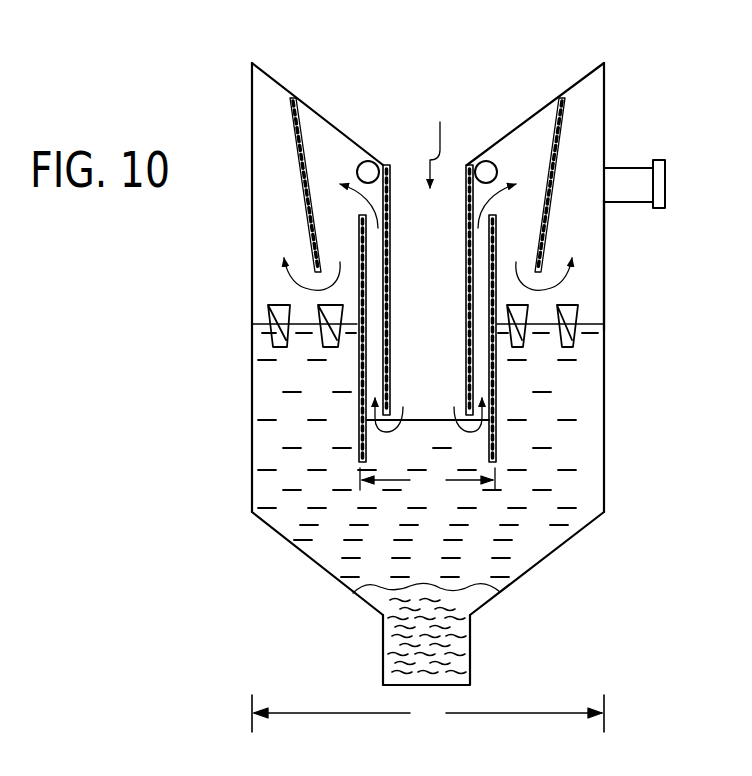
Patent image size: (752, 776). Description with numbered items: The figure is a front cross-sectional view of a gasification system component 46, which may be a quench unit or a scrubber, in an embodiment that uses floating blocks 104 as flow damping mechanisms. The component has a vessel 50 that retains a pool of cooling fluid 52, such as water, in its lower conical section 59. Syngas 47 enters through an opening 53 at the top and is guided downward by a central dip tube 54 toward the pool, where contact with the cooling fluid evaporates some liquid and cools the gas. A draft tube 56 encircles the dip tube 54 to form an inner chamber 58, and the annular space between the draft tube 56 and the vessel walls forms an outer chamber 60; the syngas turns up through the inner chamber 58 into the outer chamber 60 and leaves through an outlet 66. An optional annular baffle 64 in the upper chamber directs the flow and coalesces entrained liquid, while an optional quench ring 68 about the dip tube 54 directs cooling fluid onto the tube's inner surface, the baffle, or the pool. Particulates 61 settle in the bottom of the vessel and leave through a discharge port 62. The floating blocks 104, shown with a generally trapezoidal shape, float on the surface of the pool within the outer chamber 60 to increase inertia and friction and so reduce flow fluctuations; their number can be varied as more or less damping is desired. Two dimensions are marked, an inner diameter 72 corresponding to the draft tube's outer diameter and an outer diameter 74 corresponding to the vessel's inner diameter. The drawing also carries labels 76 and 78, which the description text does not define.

The gasification system component 46 is at (638, 41).
The syngas 47 is at (442, 140).
The vessel 50 is at (605, 230).
The cooling fluid 52 is at (268, 496).
The opening 53 is at (412, 166).
The dip tube 54 is at (383, 336).
The draft tube 56 is at (358, 385).
The inner chamber 58 is at (486, 283).
The conical section 59 is at (547, 560).
The outer chamber 60 is at (595, 260).
The particulates 61 is at (394, 644).
The discharge port 62 is at (471, 646).
The annular baffle 64 is at (557, 148).
The outlet 66 is at (664, 158).
The quench ring 68 is at (494, 158).
The inner diameter 72 is at (427, 480).
The outer diameter 74 is at (428, 713).
The spray nozzle 76 is at (268, 321).
The liquid level 78 is at (420, 418).
The floating blocks 104 is at (322, 306).